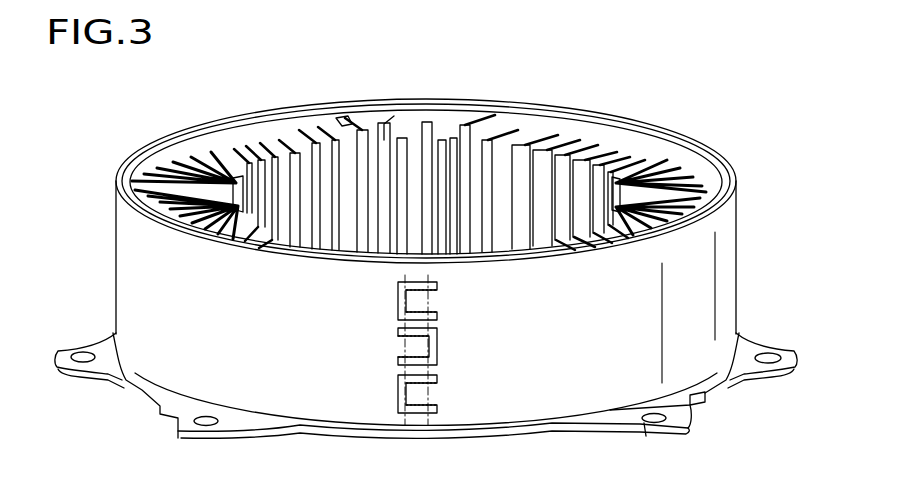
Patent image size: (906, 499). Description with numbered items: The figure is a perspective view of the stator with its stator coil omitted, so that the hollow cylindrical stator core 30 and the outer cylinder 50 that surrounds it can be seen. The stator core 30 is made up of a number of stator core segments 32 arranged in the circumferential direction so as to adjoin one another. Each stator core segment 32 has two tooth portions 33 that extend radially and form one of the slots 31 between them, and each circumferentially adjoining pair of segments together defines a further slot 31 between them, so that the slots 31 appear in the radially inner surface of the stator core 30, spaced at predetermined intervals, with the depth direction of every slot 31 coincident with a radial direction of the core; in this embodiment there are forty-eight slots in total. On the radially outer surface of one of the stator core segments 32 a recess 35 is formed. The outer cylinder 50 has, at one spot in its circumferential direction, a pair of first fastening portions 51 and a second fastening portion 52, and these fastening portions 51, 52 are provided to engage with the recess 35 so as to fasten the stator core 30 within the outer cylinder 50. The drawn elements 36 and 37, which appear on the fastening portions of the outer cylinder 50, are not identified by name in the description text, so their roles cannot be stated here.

The stator core 30 is at (672, 169).
The slot 31 is at (377, 130).
The stator core segment 32 is at (345, 120).
The tooth portion 33 is at (388, 124).
The recess 35 is at (418, 420).
The terminal 36 is at (421, 305).
The terminal 37 is at (412, 350).
The outer cylinder 50 is at (738, 272).
The first fastening portion 51 is at (412, 297).
The second fastening portion 52 is at (426, 348).